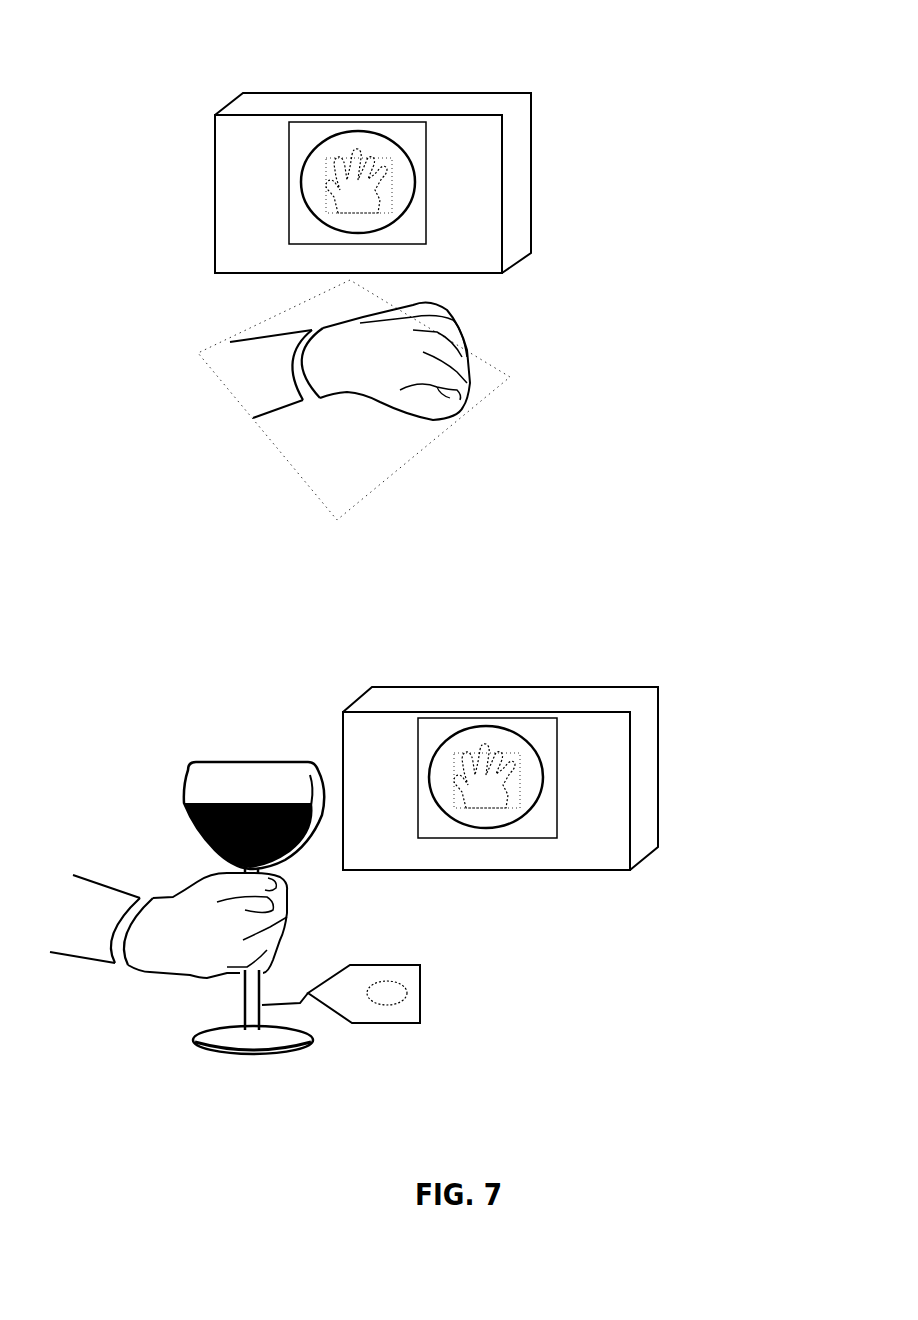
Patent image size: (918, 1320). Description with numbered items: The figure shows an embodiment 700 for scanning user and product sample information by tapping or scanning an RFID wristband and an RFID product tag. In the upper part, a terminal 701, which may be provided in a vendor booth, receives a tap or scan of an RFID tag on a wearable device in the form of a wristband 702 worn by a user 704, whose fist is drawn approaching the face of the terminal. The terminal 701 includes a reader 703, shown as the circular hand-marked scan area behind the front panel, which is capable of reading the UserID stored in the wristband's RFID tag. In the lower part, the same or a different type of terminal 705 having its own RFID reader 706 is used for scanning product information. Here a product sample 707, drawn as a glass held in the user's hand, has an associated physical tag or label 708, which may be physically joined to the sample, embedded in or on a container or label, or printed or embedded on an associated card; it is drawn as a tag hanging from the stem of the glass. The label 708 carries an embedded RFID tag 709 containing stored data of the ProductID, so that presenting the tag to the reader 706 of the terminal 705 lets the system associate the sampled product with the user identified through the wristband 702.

The embodiment 700 is at (439, 534).
The terminal 701 is at (409, 183).
The wristband 702 is at (326, 401).
The reader 703 is at (364, 180).
The user 704 is at (321, 400).
The terminal 705 is at (538, 778).
The RFID reader 706 is at (491, 773).
The product sample 707 is at (198, 908).
The physical tag or label 708 is at (379, 988).
The embedded RFID tag 709 is at (420, 979).